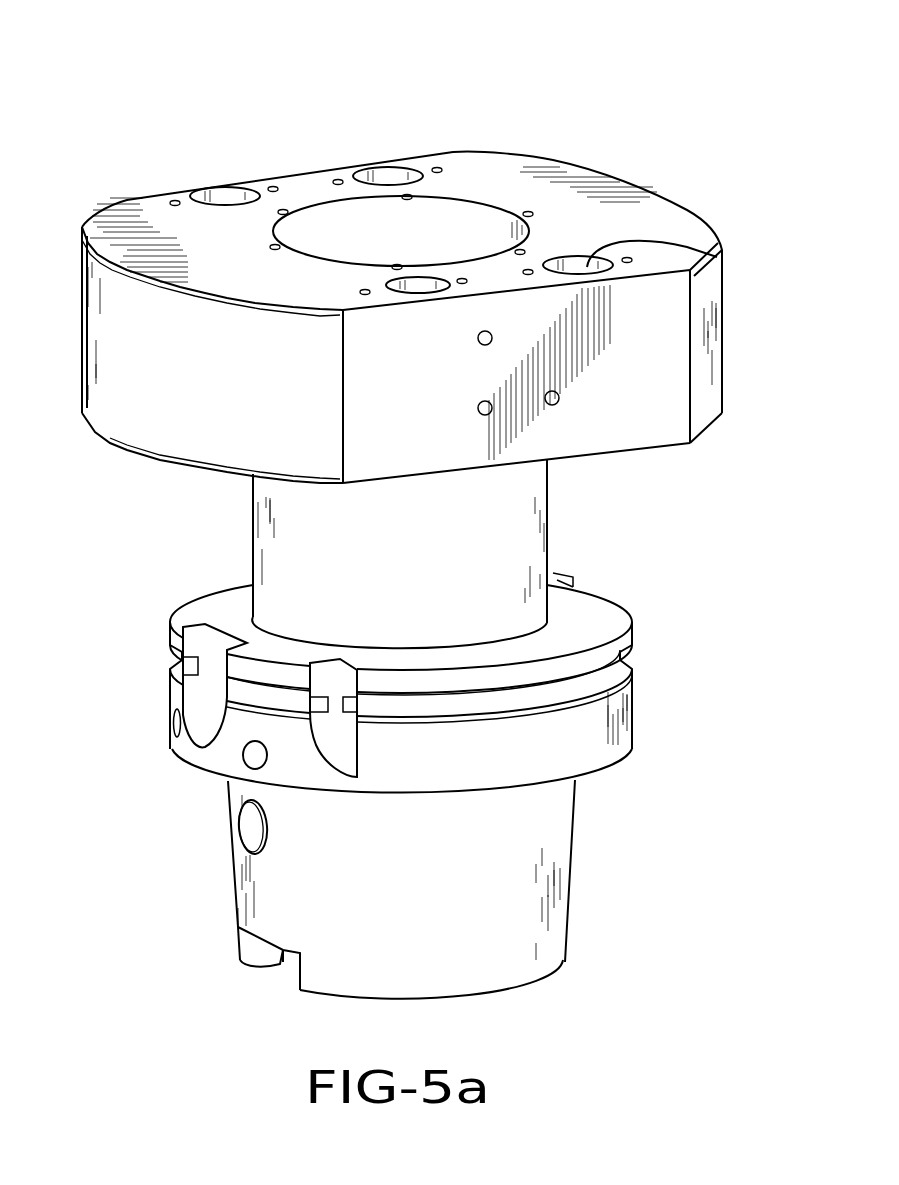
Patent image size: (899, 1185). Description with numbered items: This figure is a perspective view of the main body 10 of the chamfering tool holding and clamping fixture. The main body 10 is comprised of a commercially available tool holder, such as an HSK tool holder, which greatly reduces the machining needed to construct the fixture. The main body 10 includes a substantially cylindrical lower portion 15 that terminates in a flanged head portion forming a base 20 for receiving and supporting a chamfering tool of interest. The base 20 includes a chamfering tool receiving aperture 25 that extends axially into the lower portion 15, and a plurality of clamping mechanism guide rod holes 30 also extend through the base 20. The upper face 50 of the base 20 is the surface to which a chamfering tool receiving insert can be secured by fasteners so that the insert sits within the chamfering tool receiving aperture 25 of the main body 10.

The main body 10 is at (68, 100).
The lower portion 15 is at (628, 562).
The base 20 is at (632, 177).
The chamfering tool receiving aperture 25 is at (480, 204).
The clamping mechanism guide rod holes 30 is at (395, 174).
The face 50 is at (513, 187).